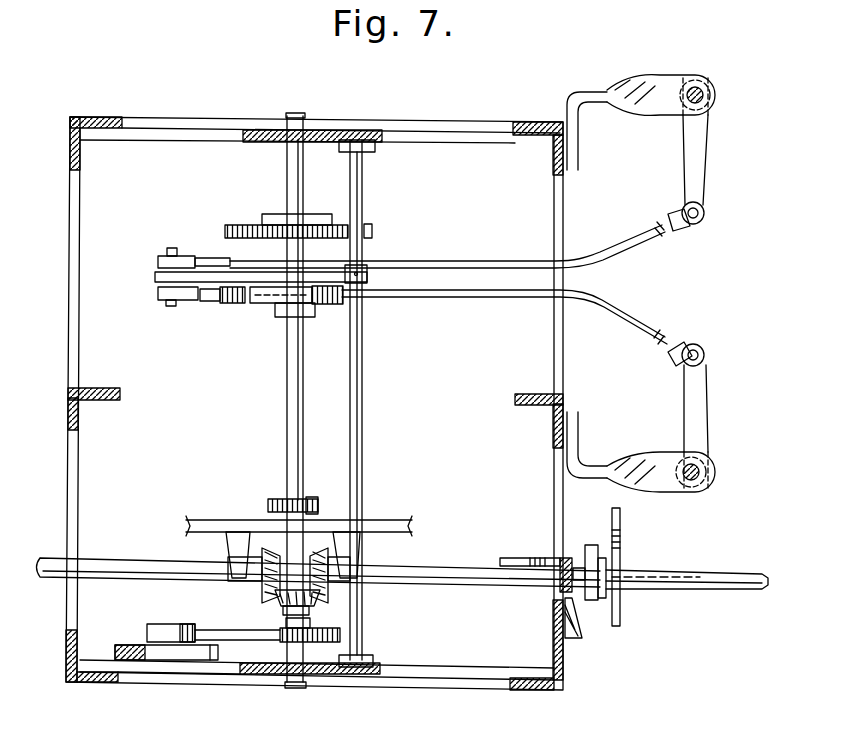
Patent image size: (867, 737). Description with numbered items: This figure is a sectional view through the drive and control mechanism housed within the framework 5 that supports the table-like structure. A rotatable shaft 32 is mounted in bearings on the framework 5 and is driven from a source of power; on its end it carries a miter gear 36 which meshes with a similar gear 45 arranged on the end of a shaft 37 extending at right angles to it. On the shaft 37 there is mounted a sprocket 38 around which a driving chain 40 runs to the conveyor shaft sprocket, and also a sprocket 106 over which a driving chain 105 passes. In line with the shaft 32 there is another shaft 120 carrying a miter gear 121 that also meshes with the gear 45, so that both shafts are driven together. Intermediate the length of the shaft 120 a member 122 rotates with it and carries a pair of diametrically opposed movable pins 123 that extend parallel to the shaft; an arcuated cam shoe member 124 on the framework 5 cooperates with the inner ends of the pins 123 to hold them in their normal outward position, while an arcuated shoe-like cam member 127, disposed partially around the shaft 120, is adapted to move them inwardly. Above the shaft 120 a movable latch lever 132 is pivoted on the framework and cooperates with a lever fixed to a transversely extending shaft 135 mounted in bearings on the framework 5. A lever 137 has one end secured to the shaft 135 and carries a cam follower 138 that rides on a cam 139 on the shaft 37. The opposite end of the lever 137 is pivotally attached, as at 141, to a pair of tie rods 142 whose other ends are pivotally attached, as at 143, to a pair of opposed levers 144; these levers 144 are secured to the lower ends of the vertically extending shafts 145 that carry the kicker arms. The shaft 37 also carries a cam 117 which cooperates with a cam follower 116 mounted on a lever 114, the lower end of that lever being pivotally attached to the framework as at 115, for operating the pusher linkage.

The framework 5 is at (66, 366).
The rotatable shaft 32 is at (52, 578).
The miter gear 36 is at (262, 582).
The shaft 37 is at (287, 455).
The sprocket 38 is at (348, 228).
The driving chain 40 is at (373, 232).
The gear 45 is at (290, 602).
The driving chain 105 is at (318, 506).
The sprocket 106 is at (308, 498).
The lever 114 is at (134, 646).
The pivot 115 is at (214, 684).
The cam follower 116 is at (176, 624).
The cam 117 is at (342, 636).
The shaft 120 is at (714, 588).
The miter gear 121 is at (330, 582).
The member 122 is at (590, 600).
The movable pins 123 is at (580, 560).
The arcuated cam shoe member 124 is at (566, 620).
The arcuated shoe-like cam member 127 is at (621, 548).
The latch lever 132 is at (562, 552).
The transversely extending shaft 135 is at (363, 404).
The lever 137 is at (245, 270).
The cam follower 138 is at (218, 303).
The cam 139 is at (262, 302).
The pivot 141 is at (166, 255).
The tie rods 142 is at (477, 262).
The pivot 143 is at (705, 212).
The opposed levers 144 is at (700, 152).
The vertically extending shafts 145 is at (705, 92).